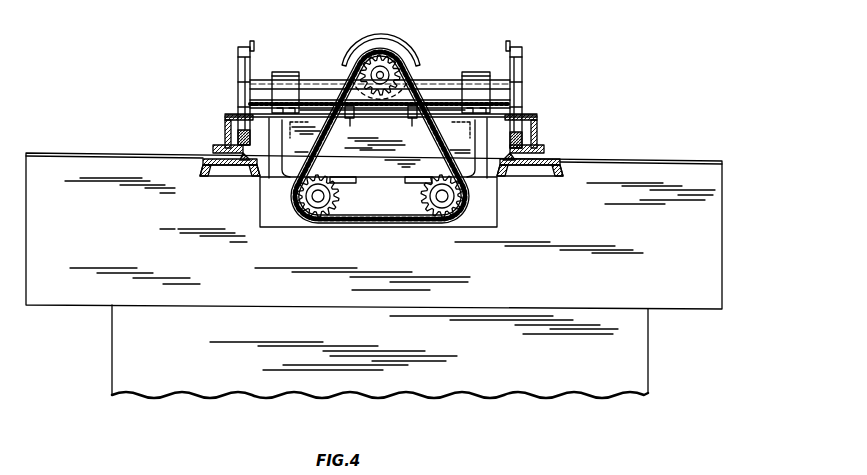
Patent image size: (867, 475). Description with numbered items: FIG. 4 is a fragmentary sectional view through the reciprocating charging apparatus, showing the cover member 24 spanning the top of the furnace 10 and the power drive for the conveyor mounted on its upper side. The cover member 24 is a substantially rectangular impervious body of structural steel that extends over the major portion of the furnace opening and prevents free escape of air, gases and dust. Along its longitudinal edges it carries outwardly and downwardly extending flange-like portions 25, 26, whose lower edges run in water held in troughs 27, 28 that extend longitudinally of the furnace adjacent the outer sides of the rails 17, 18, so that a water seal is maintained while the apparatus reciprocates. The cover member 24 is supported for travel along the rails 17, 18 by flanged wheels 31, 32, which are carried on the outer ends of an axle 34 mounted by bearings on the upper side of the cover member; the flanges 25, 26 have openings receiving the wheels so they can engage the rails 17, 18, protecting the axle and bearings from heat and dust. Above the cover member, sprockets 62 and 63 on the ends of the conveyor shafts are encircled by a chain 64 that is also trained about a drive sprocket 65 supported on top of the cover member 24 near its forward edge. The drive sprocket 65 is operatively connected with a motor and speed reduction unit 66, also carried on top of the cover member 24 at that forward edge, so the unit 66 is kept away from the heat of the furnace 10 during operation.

The workpiece / block 10 is at (142, 373).
The rail 17 is at (511, 158).
The rail 18 is at (244, 157).
The cover member 24 is at (288, 72).
The flange-like portion 25 is at (539, 127).
The flange-like portion 26 is at (226, 117).
The trough 27 is at (544, 152).
The trough 28 is at (214, 148).
The flanged wheel 31 is at (522, 77).
The flanged wheel 32 is at (238, 75).
The axle 34 is at (452, 86).
The sprocket 62 is at (452, 224).
The sprocket 63 is at (304, 227).
The chain 64 is at (342, 85).
The drive sprocket 65 is at (404, 68).
The motor and speed reduction unit 66 is at (403, 44).